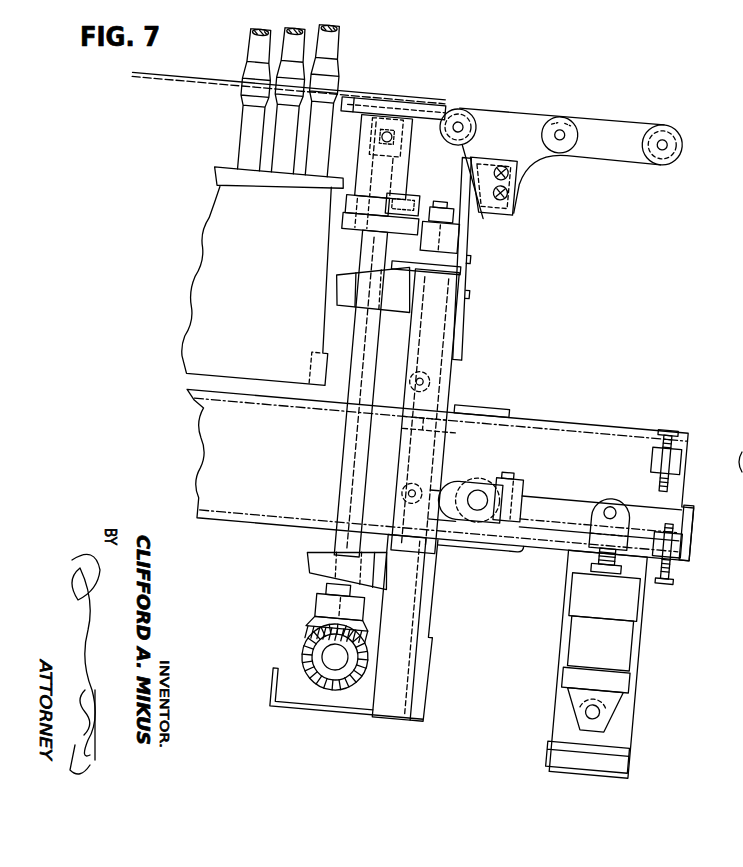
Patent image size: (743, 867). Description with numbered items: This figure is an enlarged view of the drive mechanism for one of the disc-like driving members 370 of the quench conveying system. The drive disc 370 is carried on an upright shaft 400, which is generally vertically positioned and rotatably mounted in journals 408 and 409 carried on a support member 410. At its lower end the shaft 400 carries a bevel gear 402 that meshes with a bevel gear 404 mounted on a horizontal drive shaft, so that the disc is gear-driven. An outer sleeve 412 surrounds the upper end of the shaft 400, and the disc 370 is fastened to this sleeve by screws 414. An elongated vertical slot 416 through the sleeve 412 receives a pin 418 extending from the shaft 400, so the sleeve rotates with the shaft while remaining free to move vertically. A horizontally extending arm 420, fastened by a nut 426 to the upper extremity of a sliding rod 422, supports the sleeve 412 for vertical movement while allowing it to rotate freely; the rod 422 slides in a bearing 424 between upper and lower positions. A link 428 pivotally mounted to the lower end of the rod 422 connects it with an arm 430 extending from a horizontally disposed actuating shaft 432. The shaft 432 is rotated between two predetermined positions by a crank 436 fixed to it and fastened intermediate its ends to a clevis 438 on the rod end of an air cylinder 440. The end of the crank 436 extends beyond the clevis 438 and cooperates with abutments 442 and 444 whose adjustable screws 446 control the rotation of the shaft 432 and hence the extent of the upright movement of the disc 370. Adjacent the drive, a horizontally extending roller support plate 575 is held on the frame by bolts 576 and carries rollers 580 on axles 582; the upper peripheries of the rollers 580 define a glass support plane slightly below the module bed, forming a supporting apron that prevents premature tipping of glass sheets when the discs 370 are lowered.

The disc-like driving member 370 is at (436, 104).
The upright shaft 400 is at (362, 255).
The bevel gear 402 is at (317, 607).
The bevel gear 404 is at (320, 652).
The journal 408 is at (337, 285).
The journal 409 is at (307, 562).
The support member 410 is at (450, 272).
The outer sleeve 412 is at (404, 177).
The screw 414 is at (360, 100).
The elongated vertical slot 416 is at (371, 143).
The pin 418 is at (392, 141).
The arm 420 is at (347, 222).
The sliding rod 422 is at (443, 255).
The bearing 424 is at (408, 343).
The nut 426 is at (457, 223).
The link 428 is at (442, 433).
The arm 430 is at (447, 485).
The actuating shaft 432 is at (481, 492).
The crank 436 is at (556, 492).
The clevis 438 is at (598, 520).
The air cylinder 440 is at (575, 645).
The abutment 442 is at (654, 463).
The abutment 444 is at (686, 550).
The adjustable screw 446 is at (662, 433).
The roller support plate 575 is at (567, 167).
The bolt 576 is at (512, 173).
The roller 580 is at (548, 112).
The axle 582 is at (558, 135).